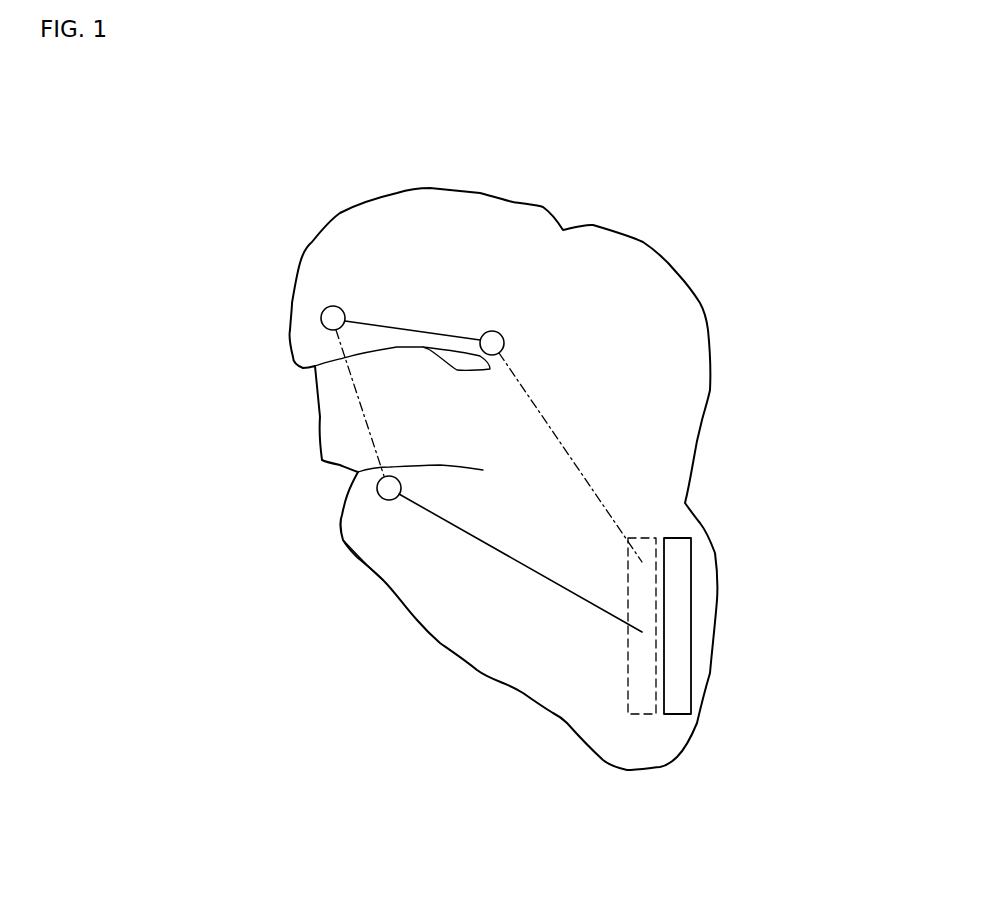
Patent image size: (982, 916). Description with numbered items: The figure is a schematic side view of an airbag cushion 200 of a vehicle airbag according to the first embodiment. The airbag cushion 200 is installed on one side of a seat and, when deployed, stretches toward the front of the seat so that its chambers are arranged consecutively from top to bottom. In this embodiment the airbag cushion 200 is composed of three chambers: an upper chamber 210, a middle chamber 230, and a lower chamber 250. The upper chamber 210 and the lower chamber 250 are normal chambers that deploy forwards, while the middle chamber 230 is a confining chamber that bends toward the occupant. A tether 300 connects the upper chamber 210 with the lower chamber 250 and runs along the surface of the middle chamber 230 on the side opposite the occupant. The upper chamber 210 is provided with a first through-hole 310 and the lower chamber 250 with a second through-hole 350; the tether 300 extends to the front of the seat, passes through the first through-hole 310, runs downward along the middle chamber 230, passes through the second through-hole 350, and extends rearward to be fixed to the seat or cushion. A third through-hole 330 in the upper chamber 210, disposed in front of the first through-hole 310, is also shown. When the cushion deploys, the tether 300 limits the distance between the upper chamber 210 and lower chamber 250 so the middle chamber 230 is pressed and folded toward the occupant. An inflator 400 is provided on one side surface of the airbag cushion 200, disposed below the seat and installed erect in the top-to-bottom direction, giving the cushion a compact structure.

The airbag cushion 200 is at (575, 199).
The upper chamber 210 is at (415, 260).
The middle chamber 230 is at (407, 407).
The lower chamber 250 is at (482, 578).
The tether 300 is at (587, 467).
The first through-hole 310 is at (502, 337).
The third through-hole 330 is at (323, 312).
The second through-hole 350 is at (378, 492).
The inflator 400 is at (683, 638).